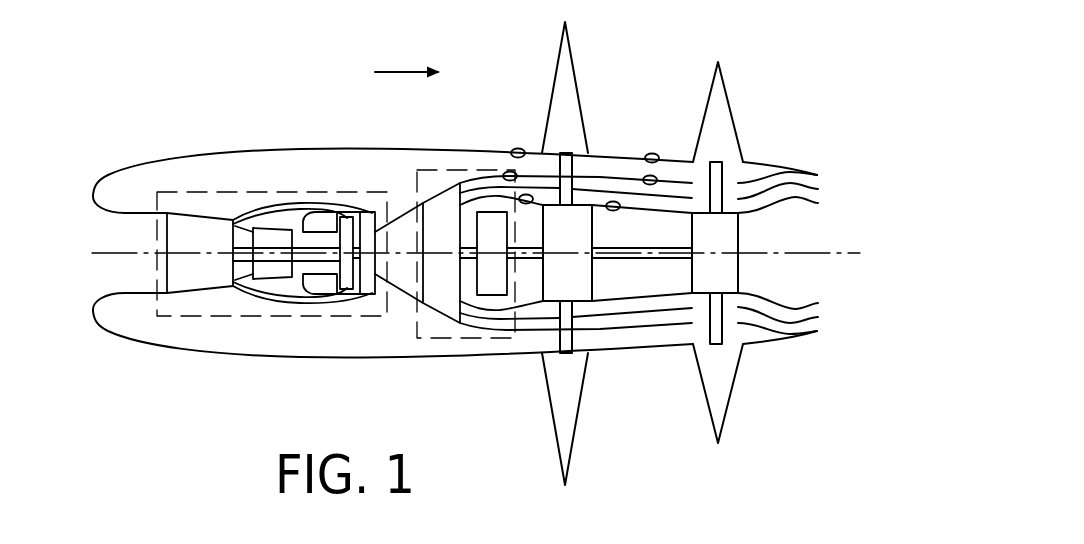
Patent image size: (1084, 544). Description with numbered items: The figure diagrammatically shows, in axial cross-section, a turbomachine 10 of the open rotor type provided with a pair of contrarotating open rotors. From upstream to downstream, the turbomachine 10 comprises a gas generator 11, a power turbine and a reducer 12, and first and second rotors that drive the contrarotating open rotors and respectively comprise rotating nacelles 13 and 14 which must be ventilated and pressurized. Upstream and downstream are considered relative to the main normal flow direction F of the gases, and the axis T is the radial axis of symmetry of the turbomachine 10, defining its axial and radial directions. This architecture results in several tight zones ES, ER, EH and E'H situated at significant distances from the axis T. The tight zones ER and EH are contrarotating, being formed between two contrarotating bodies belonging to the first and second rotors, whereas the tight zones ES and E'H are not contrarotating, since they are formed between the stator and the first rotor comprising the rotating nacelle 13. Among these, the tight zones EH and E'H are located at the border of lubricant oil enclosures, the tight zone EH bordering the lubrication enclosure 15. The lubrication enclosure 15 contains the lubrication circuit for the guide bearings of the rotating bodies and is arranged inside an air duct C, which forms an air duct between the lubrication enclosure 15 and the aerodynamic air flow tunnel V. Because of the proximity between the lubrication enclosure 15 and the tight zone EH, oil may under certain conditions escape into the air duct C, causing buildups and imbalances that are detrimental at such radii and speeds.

The turbomachine 10 is at (222, 373).
The gas generator 11 is at (300, 192).
The power turbine and reducer 12 is at (450, 170).
The rotating nacelle 13 is at (612, 356).
The rotating nacelle 14 is at (768, 344).
The lubrication enclosure 15 is at (648, 230).
The main normal flow direction F is at (400, 71).
The tight zone ES is at (516, 148).
The tight zone E'H is at (528, 111).
The tight zone EH is at (612, 201).
The tight zone ER is at (649, 175).
The aerodynamic air flow tunnel V is at (671, 188).
The air duct C is at (682, 236).
The axis T is at (817, 253).